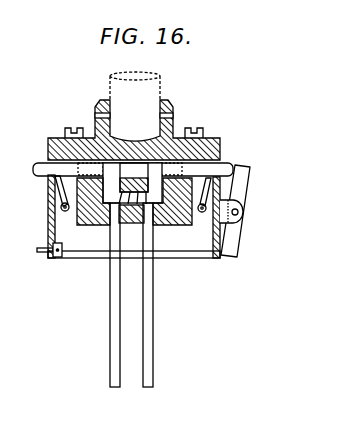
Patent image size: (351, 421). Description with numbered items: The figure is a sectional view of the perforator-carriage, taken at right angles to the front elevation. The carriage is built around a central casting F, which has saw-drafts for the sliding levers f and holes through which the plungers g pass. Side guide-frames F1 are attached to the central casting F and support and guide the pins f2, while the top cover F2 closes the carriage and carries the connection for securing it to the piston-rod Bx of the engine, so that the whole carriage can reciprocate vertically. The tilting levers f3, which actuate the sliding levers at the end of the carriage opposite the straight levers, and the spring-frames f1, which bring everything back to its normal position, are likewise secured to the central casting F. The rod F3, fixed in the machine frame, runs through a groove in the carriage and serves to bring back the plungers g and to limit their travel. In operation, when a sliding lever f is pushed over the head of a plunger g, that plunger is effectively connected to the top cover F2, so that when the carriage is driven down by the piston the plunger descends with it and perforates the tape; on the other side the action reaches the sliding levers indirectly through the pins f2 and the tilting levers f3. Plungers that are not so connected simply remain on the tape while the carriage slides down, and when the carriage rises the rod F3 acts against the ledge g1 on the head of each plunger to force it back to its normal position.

The piston-rod Bx is at (125, 106).
The top cover F2 is at (210, 144).
The rod F3 is at (132, 183).
The central casting F is at (92, 219).
The side guide-frame F1 is at (219, 259).
The sliding lever f is at (43, 164).
The spring-frame f1 is at (207, 184).
The pin f2 is at (45, 253).
The tilting lever f3 is at (234, 238).
The plunger g is at (117, 293).
The ledge g1 is at (128, 224).